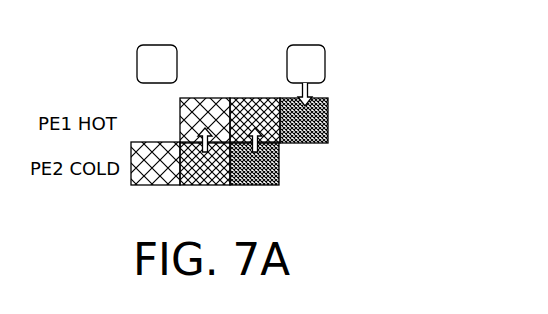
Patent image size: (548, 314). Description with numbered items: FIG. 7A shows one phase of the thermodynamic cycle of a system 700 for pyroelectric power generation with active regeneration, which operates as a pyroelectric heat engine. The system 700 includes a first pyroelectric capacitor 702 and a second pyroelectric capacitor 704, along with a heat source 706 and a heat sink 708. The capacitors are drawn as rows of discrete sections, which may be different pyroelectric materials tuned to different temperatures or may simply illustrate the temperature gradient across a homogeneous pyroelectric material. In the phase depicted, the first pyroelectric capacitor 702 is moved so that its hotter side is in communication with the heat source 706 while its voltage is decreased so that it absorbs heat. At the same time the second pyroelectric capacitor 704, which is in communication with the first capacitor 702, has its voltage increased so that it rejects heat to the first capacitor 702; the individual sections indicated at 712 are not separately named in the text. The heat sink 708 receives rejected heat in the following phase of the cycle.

The system 700 is at (307, 158).
The first pyroelectric capacitor 702 is at (328, 119).
The second pyroelectric capacitor 704 is at (279, 163).
The heat source 706 is at (325, 63).
The heat sink 708 is at (137, 63).
The thermoelectric elements 712 is at (232, 180).